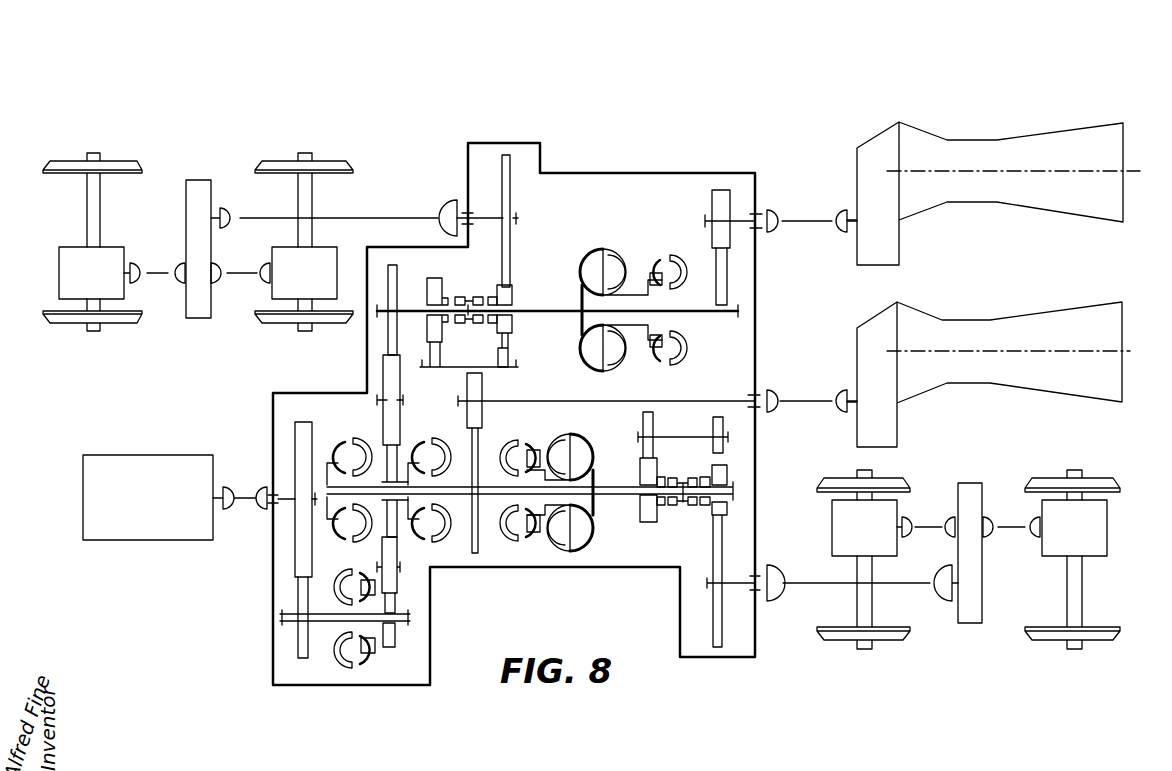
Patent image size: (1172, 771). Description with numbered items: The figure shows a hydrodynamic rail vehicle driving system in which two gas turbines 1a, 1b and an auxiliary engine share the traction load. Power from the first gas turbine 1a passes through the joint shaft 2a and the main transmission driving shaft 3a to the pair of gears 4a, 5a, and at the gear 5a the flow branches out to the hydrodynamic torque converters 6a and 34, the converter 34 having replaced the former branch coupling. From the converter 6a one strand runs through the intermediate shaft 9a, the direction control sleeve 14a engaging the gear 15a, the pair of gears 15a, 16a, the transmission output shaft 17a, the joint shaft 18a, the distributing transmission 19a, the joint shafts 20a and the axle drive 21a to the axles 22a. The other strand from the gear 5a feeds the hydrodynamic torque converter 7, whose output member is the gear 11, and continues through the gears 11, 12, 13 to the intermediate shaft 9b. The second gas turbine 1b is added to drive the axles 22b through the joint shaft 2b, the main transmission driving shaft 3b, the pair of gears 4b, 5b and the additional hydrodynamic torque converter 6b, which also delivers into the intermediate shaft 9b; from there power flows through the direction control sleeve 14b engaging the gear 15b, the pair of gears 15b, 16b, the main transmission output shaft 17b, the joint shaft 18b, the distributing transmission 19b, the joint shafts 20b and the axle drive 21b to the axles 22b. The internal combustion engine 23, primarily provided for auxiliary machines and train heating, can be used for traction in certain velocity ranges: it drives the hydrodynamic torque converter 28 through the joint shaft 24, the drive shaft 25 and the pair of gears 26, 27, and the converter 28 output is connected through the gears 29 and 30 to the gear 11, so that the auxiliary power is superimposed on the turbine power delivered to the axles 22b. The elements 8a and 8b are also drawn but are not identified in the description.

The gas turbine 1a is at (1038, 330).
The gas turbine 1b is at (1047, 157).
The joint shaft 2a is at (790, 400).
The joint shaft 2b is at (810, 218).
The main transmission driving shaft 3a is at (620, 400).
The main transmission driving shaft 3b is at (735, 218).
The gear 4a is at (475, 408).
The gear 4b is at (722, 202).
The gear 5a is at (477, 550).
The gear 5b is at (720, 270).
The hydrodynamic torque converter 6a is at (513, 527).
The hydrodynamic torque converter 6b is at (670, 263).
The hydrodynamic torque converter 7 is at (430, 452).
The hydraulic torque converter 8a is at (567, 533).
The hydraulic torque converter 8b is at (605, 263).
The intermediate shaft 9a is at (623, 492).
The intermediate shaft 9b is at (548, 310).
The gear 11 is at (393, 468).
The gear 12 is at (393, 383).
The gear 13 is at (385, 253).
The direction control sleeve 14a is at (693, 507).
The direction control sleeve 14b is at (458, 295).
The gear 15a is at (718, 477).
The gear 15b is at (510, 297).
The gear 16a is at (717, 530).
The gear 16b is at (502, 182).
The transmission output shaft 17a is at (727, 580).
The main transmission output shaft 17b is at (462, 210).
The joint shaft 18a is at (823, 584).
The joint shaft 18b is at (258, 217).
The distributing transmission 19a is at (972, 502).
The distributing transmission 19b is at (200, 190).
The joint shafts 20a is at (928, 523).
The joint shafts 20b is at (157, 273).
The axle drive 21a is at (882, 520).
The axle drive 21b is at (78, 267).
The axles 22a is at (863, 613).
The axles 22b is at (102, 155).
The internal combustion engine 23 is at (120, 490).
The joint shaft 24 is at (250, 487).
The drive shaft 25 is at (290, 500).
The gear 26 is at (305, 427).
The gear 27 is at (302, 588).
The hydrodynamic torque converter 28 is at (348, 643).
The gear 29 is at (392, 630).
The gear 30 is at (392, 567).
The converter 34 is at (352, 455).